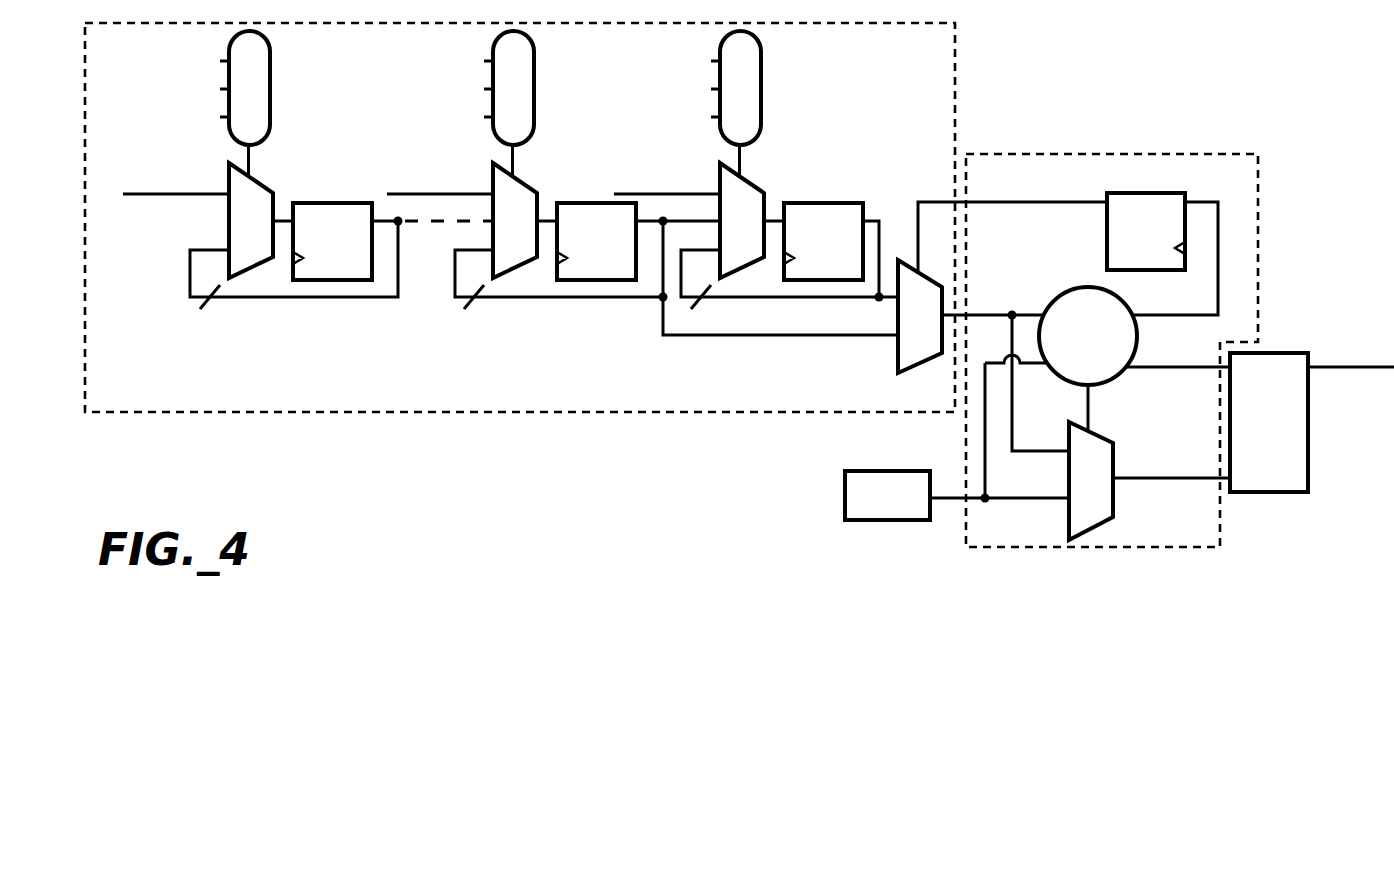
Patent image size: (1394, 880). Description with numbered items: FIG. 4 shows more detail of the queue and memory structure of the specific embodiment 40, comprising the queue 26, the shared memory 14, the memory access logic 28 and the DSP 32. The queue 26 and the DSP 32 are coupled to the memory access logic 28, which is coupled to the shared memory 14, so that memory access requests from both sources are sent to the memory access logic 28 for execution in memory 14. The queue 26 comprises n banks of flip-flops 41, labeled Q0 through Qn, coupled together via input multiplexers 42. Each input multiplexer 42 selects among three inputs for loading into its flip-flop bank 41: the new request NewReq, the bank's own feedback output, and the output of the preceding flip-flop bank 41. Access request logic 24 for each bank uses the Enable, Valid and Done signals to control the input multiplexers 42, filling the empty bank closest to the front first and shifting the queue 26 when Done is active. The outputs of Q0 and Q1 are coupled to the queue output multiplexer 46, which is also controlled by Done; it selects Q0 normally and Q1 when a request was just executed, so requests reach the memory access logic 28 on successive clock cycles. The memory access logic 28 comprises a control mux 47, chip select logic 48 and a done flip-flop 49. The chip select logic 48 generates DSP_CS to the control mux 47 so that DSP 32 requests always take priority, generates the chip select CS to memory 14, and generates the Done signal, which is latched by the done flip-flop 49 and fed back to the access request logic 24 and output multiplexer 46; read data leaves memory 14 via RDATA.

The shared memory 14 is at (1308, 437).
The access request logic 24 is at (796, 60).
The queue 26 is at (957, 63).
The memory access logic 28 is at (1085, 154).
The DSP 32 is at (843, 490).
The embodiment 40 is at (405, 447).
The bank of flip-flops 41 is at (833, 280).
The input multiplexer 42 is at (803, 173).
The queue output multiplexer 46 is at (895, 362).
The control mux 47 is at (1065, 518).
The chip select logic 48 is at (1083, 290).
The done flip-flop 49 is at (1105, 212).